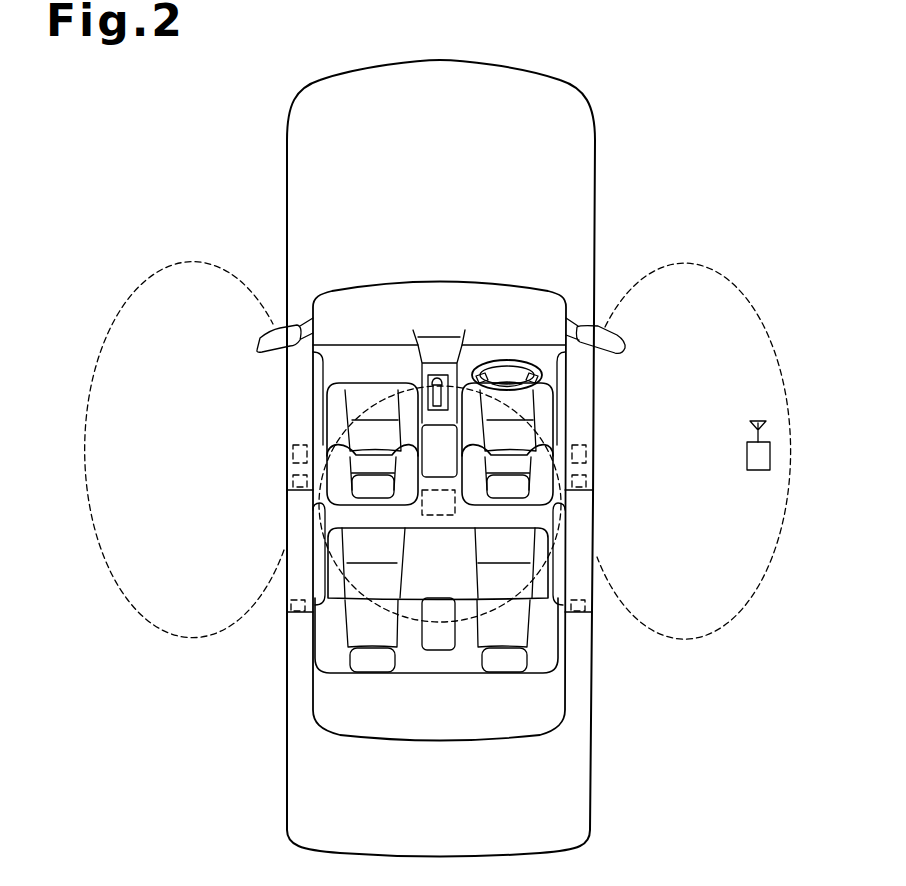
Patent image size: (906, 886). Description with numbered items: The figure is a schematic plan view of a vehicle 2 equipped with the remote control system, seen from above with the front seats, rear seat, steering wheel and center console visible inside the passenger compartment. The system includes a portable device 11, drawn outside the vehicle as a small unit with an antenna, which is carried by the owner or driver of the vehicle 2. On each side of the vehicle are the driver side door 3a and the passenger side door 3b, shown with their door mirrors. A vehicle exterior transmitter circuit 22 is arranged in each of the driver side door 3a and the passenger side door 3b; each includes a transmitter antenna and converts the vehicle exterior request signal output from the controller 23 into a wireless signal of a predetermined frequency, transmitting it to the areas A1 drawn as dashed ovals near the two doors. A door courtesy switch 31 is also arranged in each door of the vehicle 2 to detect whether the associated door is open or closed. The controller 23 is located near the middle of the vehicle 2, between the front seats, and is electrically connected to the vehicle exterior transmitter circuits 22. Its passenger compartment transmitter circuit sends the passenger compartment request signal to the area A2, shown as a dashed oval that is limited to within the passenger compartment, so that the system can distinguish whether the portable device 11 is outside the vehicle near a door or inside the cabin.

The vehicle 2 is at (595, 143).
The driver side door 3a is at (583, 373).
The passenger side door 3b is at (300, 373).
The vehicle exterior transmitter circuit 22 is at (299, 445).
The door courtesy switch 31 is at (291, 478).
The controller 23 is at (437, 516).
The area A2 is at (560, 520).
The areas A1 is at (190, 640).
The portable device 11 is at (758, 470).